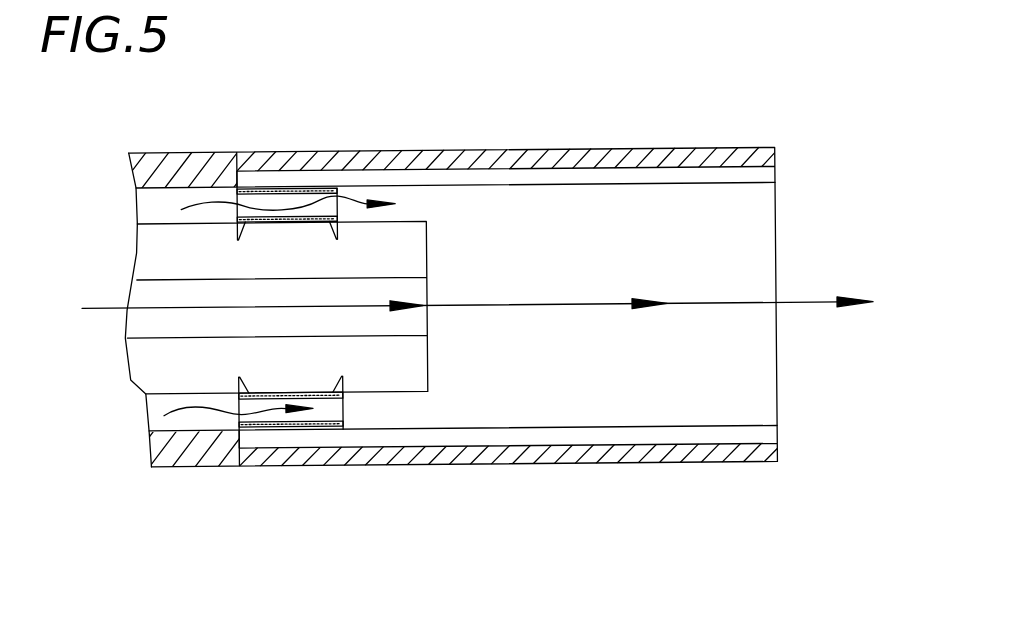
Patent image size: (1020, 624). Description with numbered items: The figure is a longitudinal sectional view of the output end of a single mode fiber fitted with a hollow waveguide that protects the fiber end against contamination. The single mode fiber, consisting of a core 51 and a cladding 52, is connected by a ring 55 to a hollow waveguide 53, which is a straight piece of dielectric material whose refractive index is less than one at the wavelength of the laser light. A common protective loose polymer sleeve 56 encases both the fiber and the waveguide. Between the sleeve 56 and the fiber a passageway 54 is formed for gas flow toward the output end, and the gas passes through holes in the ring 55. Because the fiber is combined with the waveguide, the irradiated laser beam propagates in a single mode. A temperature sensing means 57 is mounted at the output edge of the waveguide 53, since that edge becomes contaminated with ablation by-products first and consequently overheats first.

The core 51 is at (170, 320).
The cladding 52 is at (147, 363).
The hollow waveguide 53 is at (757, 433).
The passageway 54 is at (160, 207).
The ring 55 is at (273, 188).
The protective loose polymer sleeve 56 is at (550, 457).
The temperature sensing means 57 is at (762, 147).